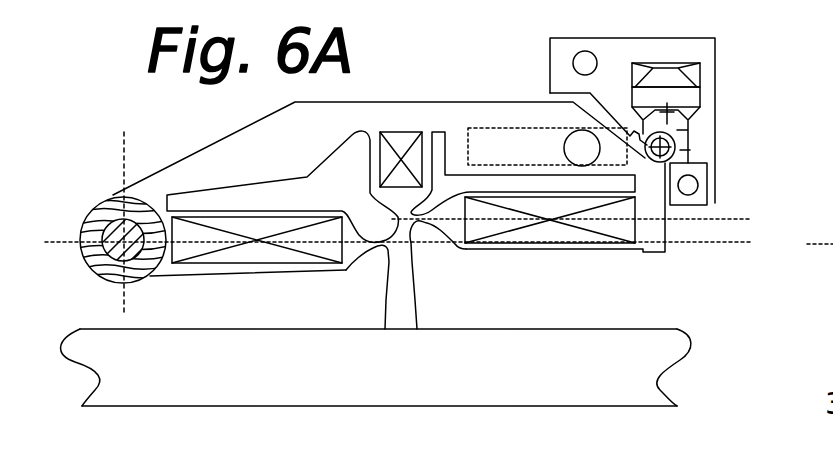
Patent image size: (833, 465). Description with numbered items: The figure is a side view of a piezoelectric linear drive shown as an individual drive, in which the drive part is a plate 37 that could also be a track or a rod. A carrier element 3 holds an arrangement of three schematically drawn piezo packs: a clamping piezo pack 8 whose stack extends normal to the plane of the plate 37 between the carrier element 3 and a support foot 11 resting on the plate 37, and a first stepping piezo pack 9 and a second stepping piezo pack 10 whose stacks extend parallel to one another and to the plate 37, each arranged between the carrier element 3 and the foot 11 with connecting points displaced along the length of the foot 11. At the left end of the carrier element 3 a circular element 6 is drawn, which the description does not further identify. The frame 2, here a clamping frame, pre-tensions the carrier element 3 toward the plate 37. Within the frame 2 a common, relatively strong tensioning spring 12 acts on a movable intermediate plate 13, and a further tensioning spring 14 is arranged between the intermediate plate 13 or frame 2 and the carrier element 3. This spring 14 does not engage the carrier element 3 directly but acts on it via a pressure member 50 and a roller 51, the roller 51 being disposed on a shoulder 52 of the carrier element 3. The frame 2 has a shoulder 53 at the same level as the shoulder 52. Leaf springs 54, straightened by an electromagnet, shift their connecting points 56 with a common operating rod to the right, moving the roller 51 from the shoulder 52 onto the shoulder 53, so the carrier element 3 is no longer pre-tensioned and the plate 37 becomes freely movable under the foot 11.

The frame 2 is at (698, 52).
The carrier element 3 is at (443, 108).
The workpiece (log) 6 is at (120, 232).
The clamping piezo pack 8 is at (405, 140).
The first stepping piezo pack 9 is at (260, 252).
The second stepping piezo pack 10 is at (570, 232).
The support foot 11 is at (403, 302).
The tensioning spring 12 is at (692, 80).
The intermediate plate 13 is at (687, 98).
The tensioning spring 14 is at (690, 117).
The plate 37 is at (193, 387).
The pressure member 50 is at (693, 155).
The roller 51 is at (672, 165).
The shoulder of the carrier element 52 is at (666, 176).
The shoulder of the frame 53 is at (696, 195).
The leaf spring 54 is at (630, 450).
The connecting point 56 is at (709, 449).